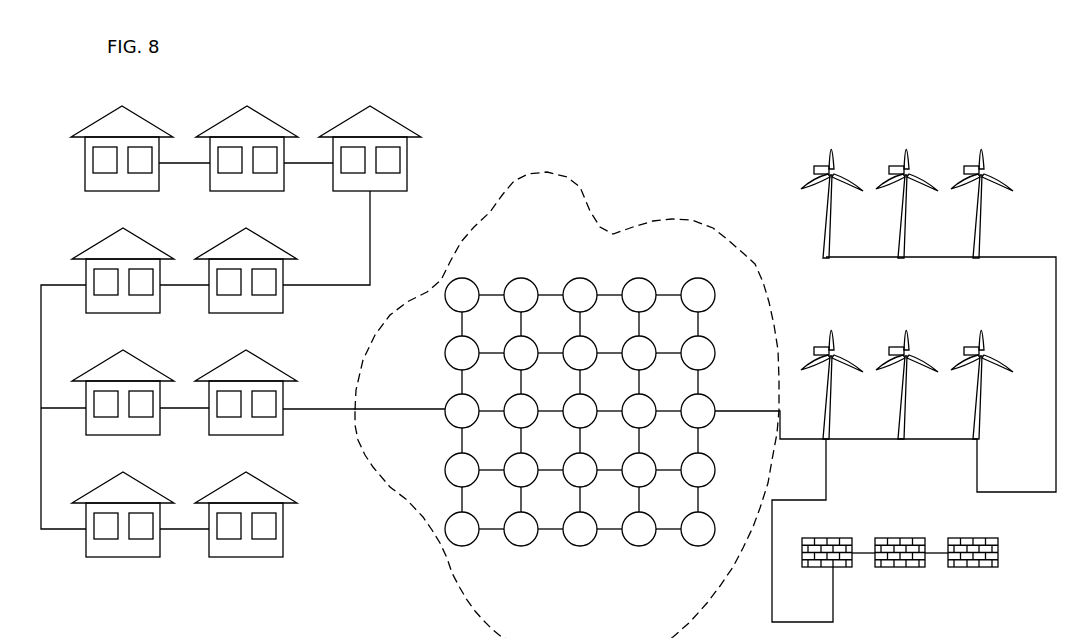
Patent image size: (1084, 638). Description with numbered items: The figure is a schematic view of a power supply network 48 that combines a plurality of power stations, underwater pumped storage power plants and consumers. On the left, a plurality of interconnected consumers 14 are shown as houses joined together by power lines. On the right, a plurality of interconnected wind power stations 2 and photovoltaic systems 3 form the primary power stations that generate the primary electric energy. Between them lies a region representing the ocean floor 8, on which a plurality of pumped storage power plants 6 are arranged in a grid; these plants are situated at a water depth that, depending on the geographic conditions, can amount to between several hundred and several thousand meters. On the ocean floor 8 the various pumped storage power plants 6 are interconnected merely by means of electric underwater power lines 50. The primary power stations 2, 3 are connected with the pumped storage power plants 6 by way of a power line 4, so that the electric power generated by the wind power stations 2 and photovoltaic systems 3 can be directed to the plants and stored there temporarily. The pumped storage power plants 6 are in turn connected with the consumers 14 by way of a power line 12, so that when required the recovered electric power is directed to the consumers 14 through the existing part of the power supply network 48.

The consumer 14 is at (147, 113).
The pumped storage power plant 6 is at (474, 283).
The electric underwater power line 50 is at (460, 326).
The power supply network 48 is at (303, 408).
The power line 12 is at (360, 408).
The ocean floor 8 is at (567, 405).
The power line 4 is at (736, 410).
The wind power station 2 is at (832, 234).
The photovoltaic system 3 is at (832, 535).